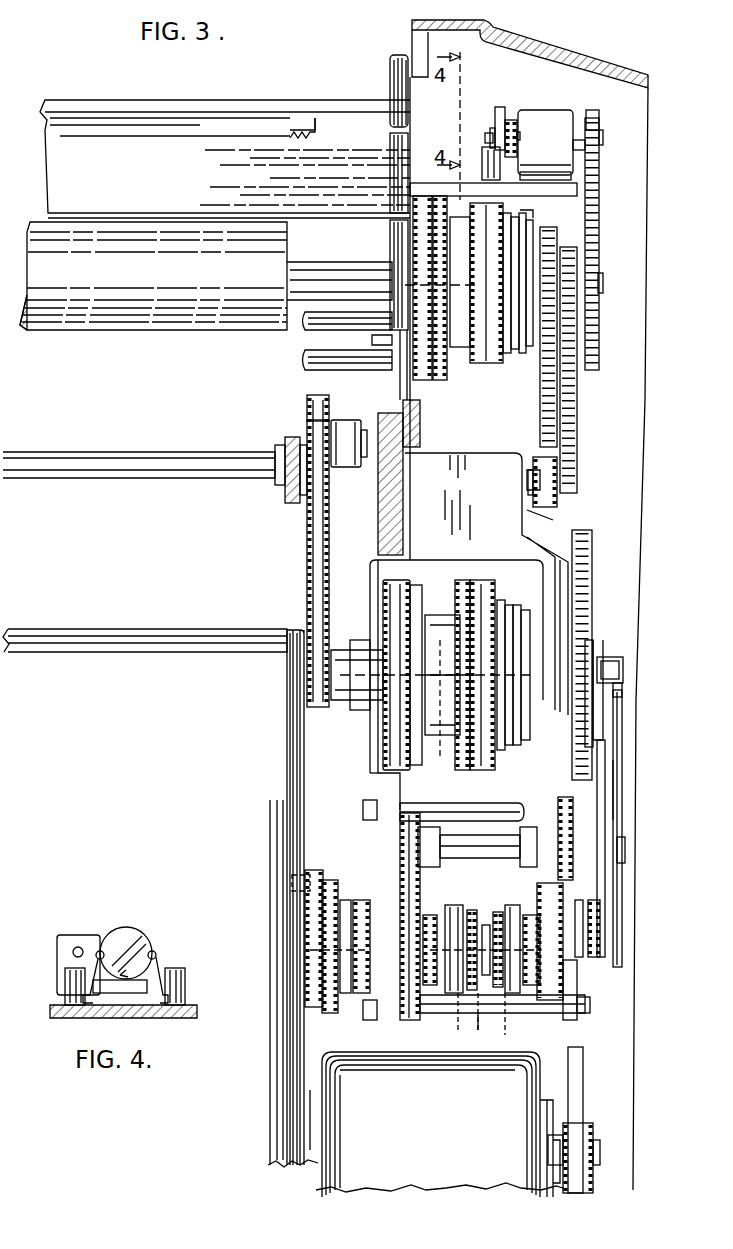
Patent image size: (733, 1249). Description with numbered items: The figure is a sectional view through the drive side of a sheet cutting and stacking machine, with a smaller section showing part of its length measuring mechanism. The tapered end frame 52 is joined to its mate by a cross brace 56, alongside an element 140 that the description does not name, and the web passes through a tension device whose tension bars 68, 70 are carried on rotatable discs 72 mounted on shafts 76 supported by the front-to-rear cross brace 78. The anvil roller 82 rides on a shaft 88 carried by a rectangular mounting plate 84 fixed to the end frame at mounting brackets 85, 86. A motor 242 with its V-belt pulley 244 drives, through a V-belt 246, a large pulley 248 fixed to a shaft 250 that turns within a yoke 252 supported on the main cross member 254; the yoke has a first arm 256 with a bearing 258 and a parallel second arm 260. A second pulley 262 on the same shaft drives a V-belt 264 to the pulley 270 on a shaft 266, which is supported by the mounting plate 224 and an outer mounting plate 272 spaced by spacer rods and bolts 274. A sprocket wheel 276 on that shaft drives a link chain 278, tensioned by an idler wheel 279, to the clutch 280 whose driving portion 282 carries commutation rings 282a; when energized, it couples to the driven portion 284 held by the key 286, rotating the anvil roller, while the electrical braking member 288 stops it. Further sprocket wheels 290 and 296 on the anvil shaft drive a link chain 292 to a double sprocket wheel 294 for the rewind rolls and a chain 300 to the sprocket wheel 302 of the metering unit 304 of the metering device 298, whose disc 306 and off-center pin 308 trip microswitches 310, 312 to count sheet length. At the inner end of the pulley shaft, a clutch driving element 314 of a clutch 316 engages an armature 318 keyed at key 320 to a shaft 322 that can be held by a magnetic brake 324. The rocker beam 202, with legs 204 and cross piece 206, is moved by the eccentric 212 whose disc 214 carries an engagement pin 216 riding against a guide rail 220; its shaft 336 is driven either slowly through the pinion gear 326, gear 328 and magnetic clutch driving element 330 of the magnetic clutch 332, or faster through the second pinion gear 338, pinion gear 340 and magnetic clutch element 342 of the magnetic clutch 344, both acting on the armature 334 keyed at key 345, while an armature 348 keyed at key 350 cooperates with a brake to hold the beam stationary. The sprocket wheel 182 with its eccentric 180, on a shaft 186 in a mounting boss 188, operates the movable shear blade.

In FIG. 3, the end frame 52 is at (650, 78).
In FIG. 3, the cross brace 56 is at (65, 162).
In FIG. 3, the tension bar 68 is at (303, 327).
In FIG. 3, the tension bar 70 is at (302, 365).
In FIG. 3, the rotatable disc 72 is at (378, 345).
In FIG. 3, the shaft 76 is at (378, 362).
In FIG. 3, the cross brace 78 is at (420, 423).
In FIG. 3, the anvil roller 82 is at (70, 328).
In FIG. 3, the rectangular mounting plate 84 is at (400, 233).
In FIG. 3, the mounting bracket 85 is at (400, 82).
In FIG. 3, the mounting bracket 86 is at (410, 35).
In FIG. 3, the shaft 88 is at (300, 277).
In FIG. 3, the rack 140 is at (72, 118).
In FIG. 3, the eccentric 180 is at (358, 420).
In FIG. 3, the sprocket wheel 182 is at (320, 400).
In FIG. 3, the shaft 186 is at (110, 470).
In FIG. 3, the mounting boss 188 is at (285, 437).
In FIG. 3, the rocker beam 202 is at (260, 1121).
In FIG. 3, the leg 204 is at (288, 797).
In FIG. 3, the cross piece 206 is at (60, 650).
In FIG. 3, the eccentric 212 is at (300, 970).
In FIG. 3, the disc 214 is at (303, 995).
In FIG. 3, the engagement pin 216 is at (292, 885).
In FIG. 3, the guide rail 220 is at (286, 1020).
In FIG. 3, the mounting plate 224 is at (382, 1045).
In FIG. 3, the motor 242 is at (428, 1153).
In FIG. 3, the V-belt pulley 244 is at (585, 1135).
In FIG. 3, the V-belt 246 is at (585, 628).
In FIG. 3, the large pulley 248 is at (590, 590).
In FIG. 3, the shaft 250 is at (625, 672).
In FIG. 3, the yoke 252 is at (468, 509).
In FIG. 3, the main cross member 254 is at (380, 495).
In FIG. 3, the first arm 256 is at (565, 580).
In FIG. 3, the bearing 258 is at (600, 665).
In FIG. 3, the second arm 260 is at (362, 775).
In FIG. 3, the second pulley 262 is at (624, 697).
In FIG. 3, the V-belt 264 is at (623, 735).
In FIG. 3, the shaft 266 is at (625, 850).
In FIG. 3, the pulley 270 is at (622, 785).
In FIG. 3, the mounting plate 272 is at (580, 992).
In FIG. 3, the spacer rods and bolts 274 is at (498, 810).
In FIG. 3, the sprocket wheel 276 is at (516, 938).
In FIG. 3, the link chain 278 is at (540, 433).
In FIG. 3, the idler wheel 279 is at (557, 515).
In FIG. 3, the clutch 280 is at (537, 197).
In FIG. 3, the driving portion 282 is at (500, 365).
In FIG. 3, the commutation rings 282a is at (533, 218).
In FIG. 3, the driven portion 284 is at (462, 382).
In FIG. 3, the key 286 is at (395, 283).
In FIG. 3, the electrical braking member 288 is at (345, 197).
In FIG. 3, the sprocket wheel 290 is at (570, 245).
In FIG. 3, the link chain 292 is at (578, 423).
In FIG. 3, the double sprocket wheel 294 is at (565, 495).
In FIG. 3, the sprocket wheel 296 is at (590, 370).
In FIG. 3, the metering device 298 is at (552, 102).
In FIG. 4, the metering device 298 is at (106, 902).
In FIG. 3, the chain 300 is at (597, 165).
In FIG. 3, the sprocket wheel 302 is at (597, 120).
In FIG. 3, the metering unit 304 is at (530, 115).
In FIG. 4, the metering unit 304 is at (68, 933).
In FIG. 3, the disc 306 is at (500, 115).
In FIG. 4, the disc 306 is at (130, 935).
In FIG. 3, the off-center pin 308 is at (490, 135).
In FIG. 4, the off-center pin 308 is at (155, 952).
In FIG. 3, the microswitch 310 is at (486, 165).
In FIG. 4, the microswitch 310 is at (185, 980).
In FIG. 4, the microswitch 312 is at (68, 985).
In FIG. 3, the clutch driving element 314 is at (488, 582).
In FIG. 3, the clutch 316 is at (483, 520).
In FIG. 3, the armature 318 is at (440, 612).
In FIG. 3, the key 320 is at (438, 706).
In FIG. 3, the shaft 322 is at (338, 703).
In FIG. 3, the magnetic brake 324 is at (393, 620).
In FIG. 3, the pinion gear 326 is at (420, 812).
In FIG. 3, the gear 328 is at (315, 535).
In FIG. 3, the magnetic clutch driving element 330 is at (452, 910).
In FIG. 3, the magnetic clutch 332 is at (455, 1025).
In FIG. 3, the armature 334 is at (475, 915).
In FIG. 3, the shaft 336 is at (565, 945).
In FIG. 3, the second pinion gear 338 is at (573, 818).
In FIG. 3, the pinion gear 340 is at (555, 985).
In FIG. 3, the magnetic clutch element 342 is at (520, 1024).
In FIG. 3, the magnetic clutch 344 is at (487, 1048).
In FIG. 3, the key 345 is at (487, 1021).
In FIG. 3, the armature 348 is at (328, 1005).
In FIG. 3, the key 350 is at (305, 955).